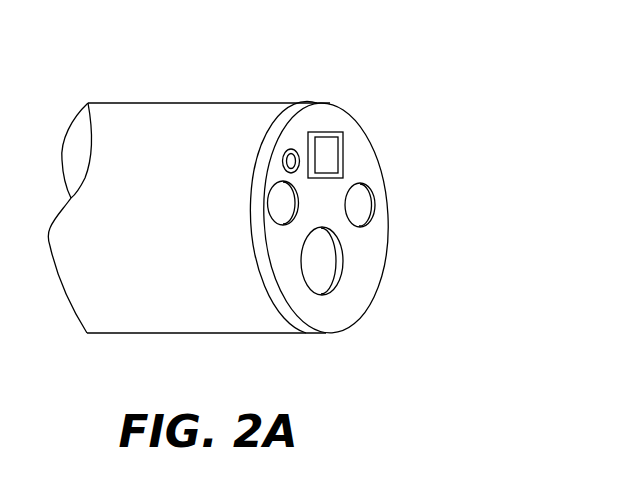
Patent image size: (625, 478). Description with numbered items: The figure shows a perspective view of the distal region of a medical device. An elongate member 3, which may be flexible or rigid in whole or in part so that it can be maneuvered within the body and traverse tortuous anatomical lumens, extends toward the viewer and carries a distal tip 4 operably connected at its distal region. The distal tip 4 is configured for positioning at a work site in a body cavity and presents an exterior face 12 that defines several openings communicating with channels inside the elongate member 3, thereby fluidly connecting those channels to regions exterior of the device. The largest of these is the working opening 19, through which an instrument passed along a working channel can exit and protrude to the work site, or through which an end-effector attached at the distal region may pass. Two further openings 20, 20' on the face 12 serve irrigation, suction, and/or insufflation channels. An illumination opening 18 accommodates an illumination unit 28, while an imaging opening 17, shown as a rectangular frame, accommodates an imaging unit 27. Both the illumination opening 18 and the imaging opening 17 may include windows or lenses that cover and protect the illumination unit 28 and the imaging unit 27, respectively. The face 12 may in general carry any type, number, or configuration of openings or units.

The elongate member 3 is at (161, 83).
The distal tip 4 is at (335, 71).
The exterior face 12 is at (409, 116).
The imaging opening 17 is at (338, 157).
The illumination opening 18 is at (293, 151).
The working opening 19 is at (321, 268).
The opening 20 is at (383, 199).
The opening 20' is at (246, 187).
The imaging unit 27 is at (332, 143).
The illumination unit 28 is at (284, 152).